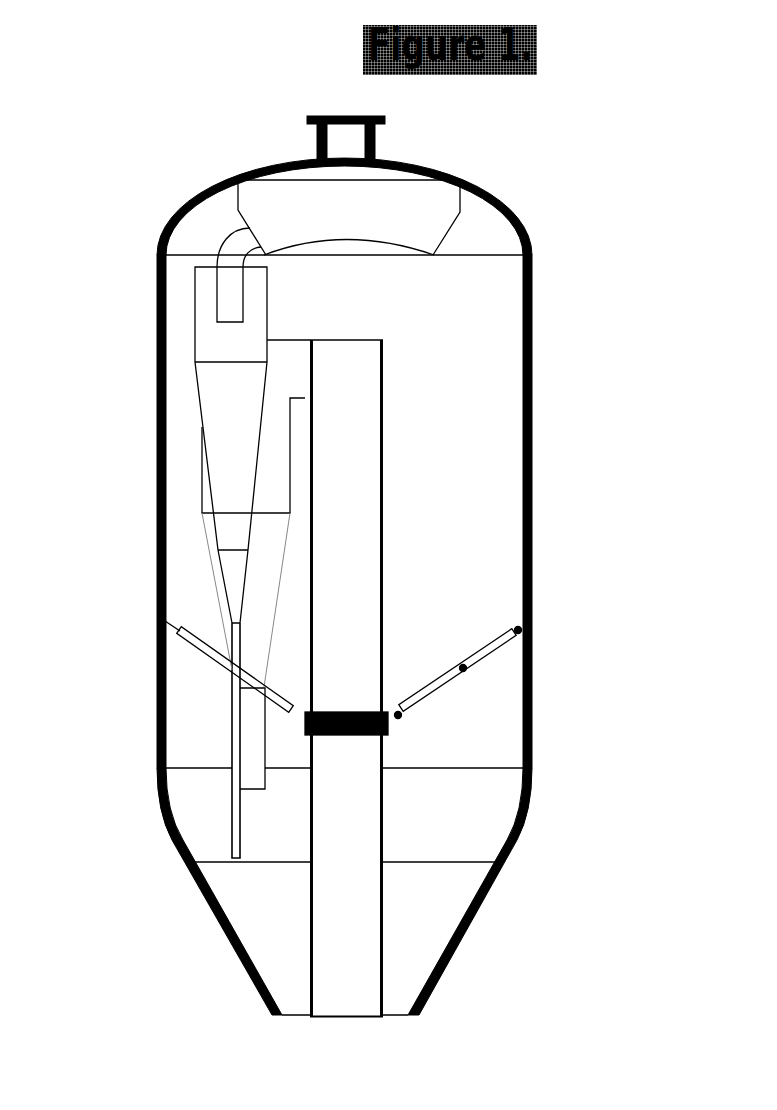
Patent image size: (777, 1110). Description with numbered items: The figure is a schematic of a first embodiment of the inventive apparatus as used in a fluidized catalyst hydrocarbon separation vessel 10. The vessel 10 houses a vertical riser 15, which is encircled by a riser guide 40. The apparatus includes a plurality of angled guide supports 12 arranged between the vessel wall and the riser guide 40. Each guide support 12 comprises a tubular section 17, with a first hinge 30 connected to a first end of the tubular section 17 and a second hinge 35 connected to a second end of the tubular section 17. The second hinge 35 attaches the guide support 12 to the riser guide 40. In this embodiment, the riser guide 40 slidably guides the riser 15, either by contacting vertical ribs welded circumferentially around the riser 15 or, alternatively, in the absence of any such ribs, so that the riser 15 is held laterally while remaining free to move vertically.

The fluidized catalyst hydrocarbon separation vessel 10 is at (527, 304).
The angled guide support 12 is at (205, 682).
The riser 15 is at (352, 896).
The tubular section 17 is at (463, 668).
The first hinge 30 is at (518, 630).
The second hinge 35 is at (398, 715).
The riser guide 40 is at (388, 735).